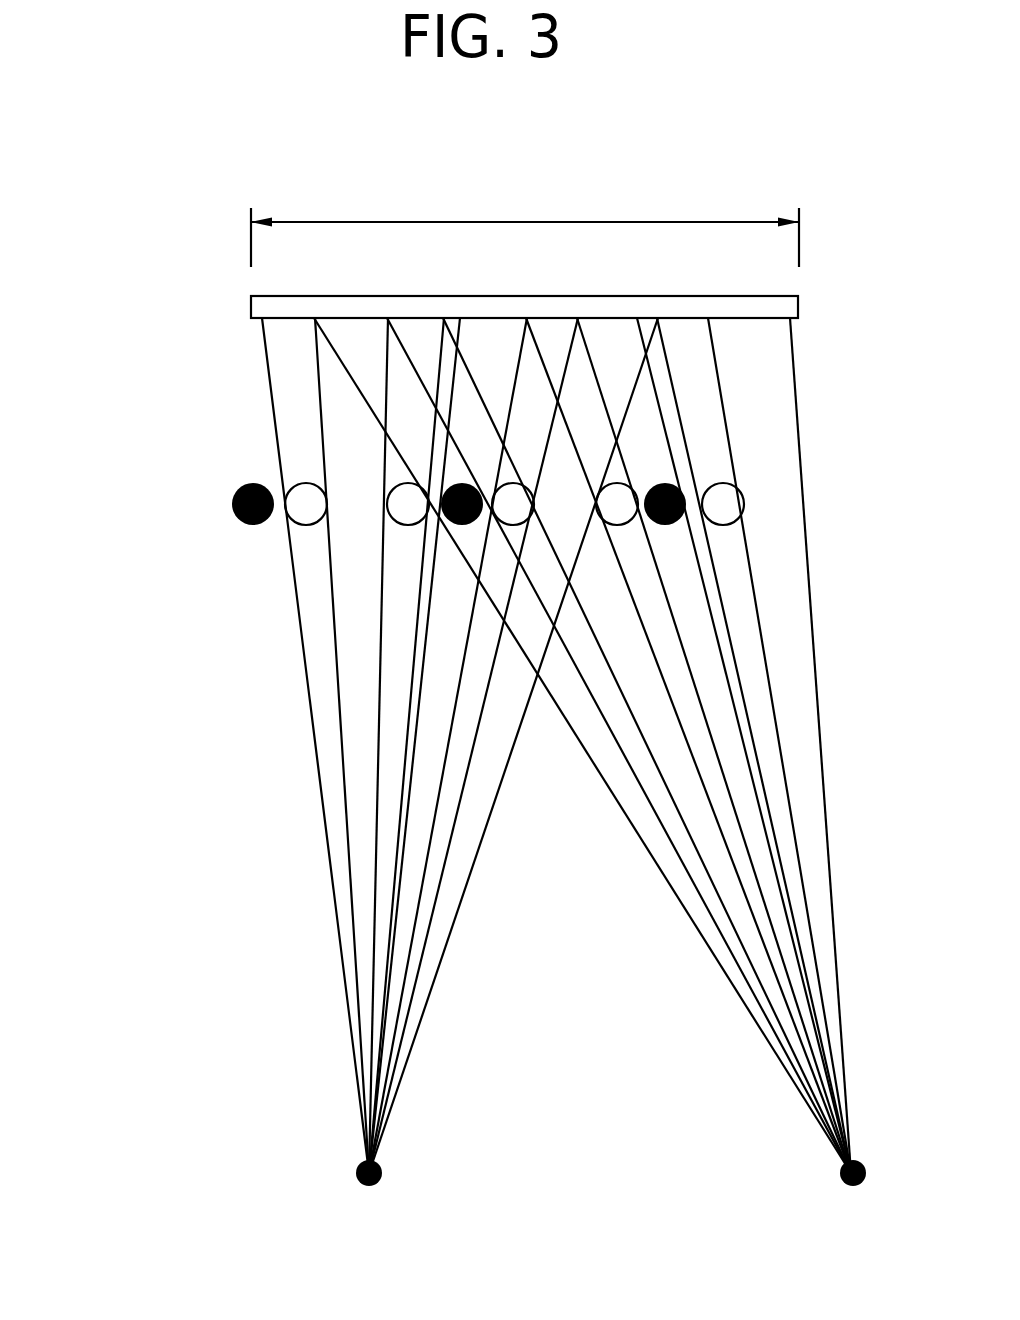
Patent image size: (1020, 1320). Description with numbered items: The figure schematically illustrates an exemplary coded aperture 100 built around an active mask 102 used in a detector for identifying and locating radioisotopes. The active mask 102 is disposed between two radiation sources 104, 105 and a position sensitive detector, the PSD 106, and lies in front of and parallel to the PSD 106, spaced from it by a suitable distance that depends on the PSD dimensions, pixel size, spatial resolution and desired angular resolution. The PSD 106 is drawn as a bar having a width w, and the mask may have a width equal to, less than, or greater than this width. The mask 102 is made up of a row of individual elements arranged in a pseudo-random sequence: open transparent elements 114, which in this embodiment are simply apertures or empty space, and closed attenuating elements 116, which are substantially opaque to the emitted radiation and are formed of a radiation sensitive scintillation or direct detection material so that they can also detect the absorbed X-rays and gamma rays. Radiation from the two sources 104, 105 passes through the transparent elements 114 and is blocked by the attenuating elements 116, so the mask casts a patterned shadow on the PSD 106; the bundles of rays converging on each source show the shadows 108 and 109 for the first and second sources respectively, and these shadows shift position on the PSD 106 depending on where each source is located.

The coded aperture 100 is at (140, 400).
The active mask 102 is at (222, 537).
The radiation source 104 is at (383, 1170).
The radiation source 105 is at (841, 1172).
The PSD 106 is at (788, 307).
The shadow 108 is at (402, 960).
The shadow 109 is at (780, 950).
The transparent elements 114 is at (563, 513).
The attenuating elements 116 is at (622, 495).